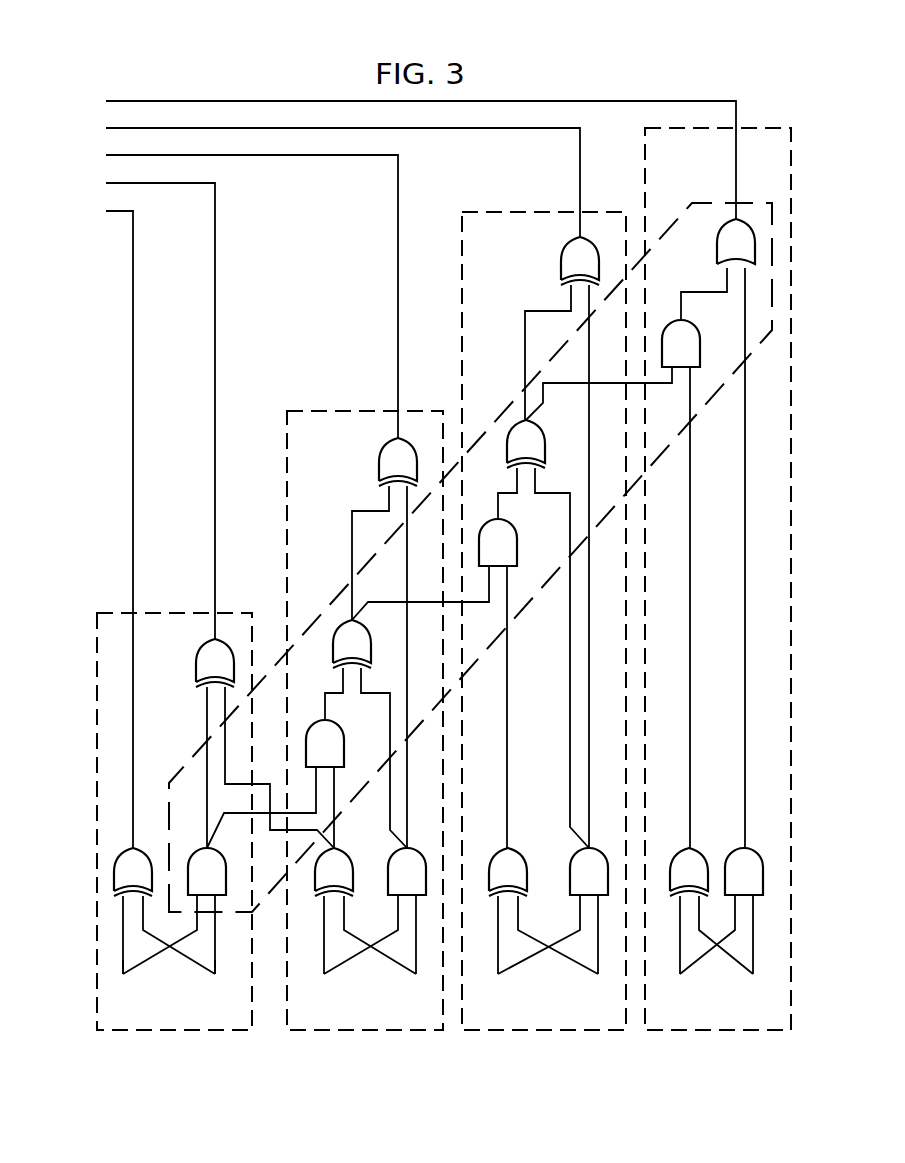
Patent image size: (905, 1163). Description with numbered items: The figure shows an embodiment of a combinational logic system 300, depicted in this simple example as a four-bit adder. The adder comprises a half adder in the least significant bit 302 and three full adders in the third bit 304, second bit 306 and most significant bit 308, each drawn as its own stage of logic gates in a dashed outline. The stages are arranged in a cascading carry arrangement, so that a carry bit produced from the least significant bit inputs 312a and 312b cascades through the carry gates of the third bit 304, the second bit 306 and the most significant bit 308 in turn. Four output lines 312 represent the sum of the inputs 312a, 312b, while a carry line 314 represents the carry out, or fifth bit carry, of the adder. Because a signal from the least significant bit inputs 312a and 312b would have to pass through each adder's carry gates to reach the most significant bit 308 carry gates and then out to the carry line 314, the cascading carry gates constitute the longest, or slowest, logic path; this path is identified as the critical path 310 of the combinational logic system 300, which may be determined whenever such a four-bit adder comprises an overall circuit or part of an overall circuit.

The combinational logic system 300 is at (633, 62).
The least significant bit 302 is at (162, 1031).
The third bit 304 is at (352, 1031).
The second bit 306 is at (555, 1031).
The most significant bit 308 is at (718, 1031).
The critical path 310 is at (750, 200).
The output lines 312 is at (97, 125).
The least significant bit input 312a is at (127, 976).
The least significant bit input 312b is at (212, 976).
The carry line 314 is at (128, 100).